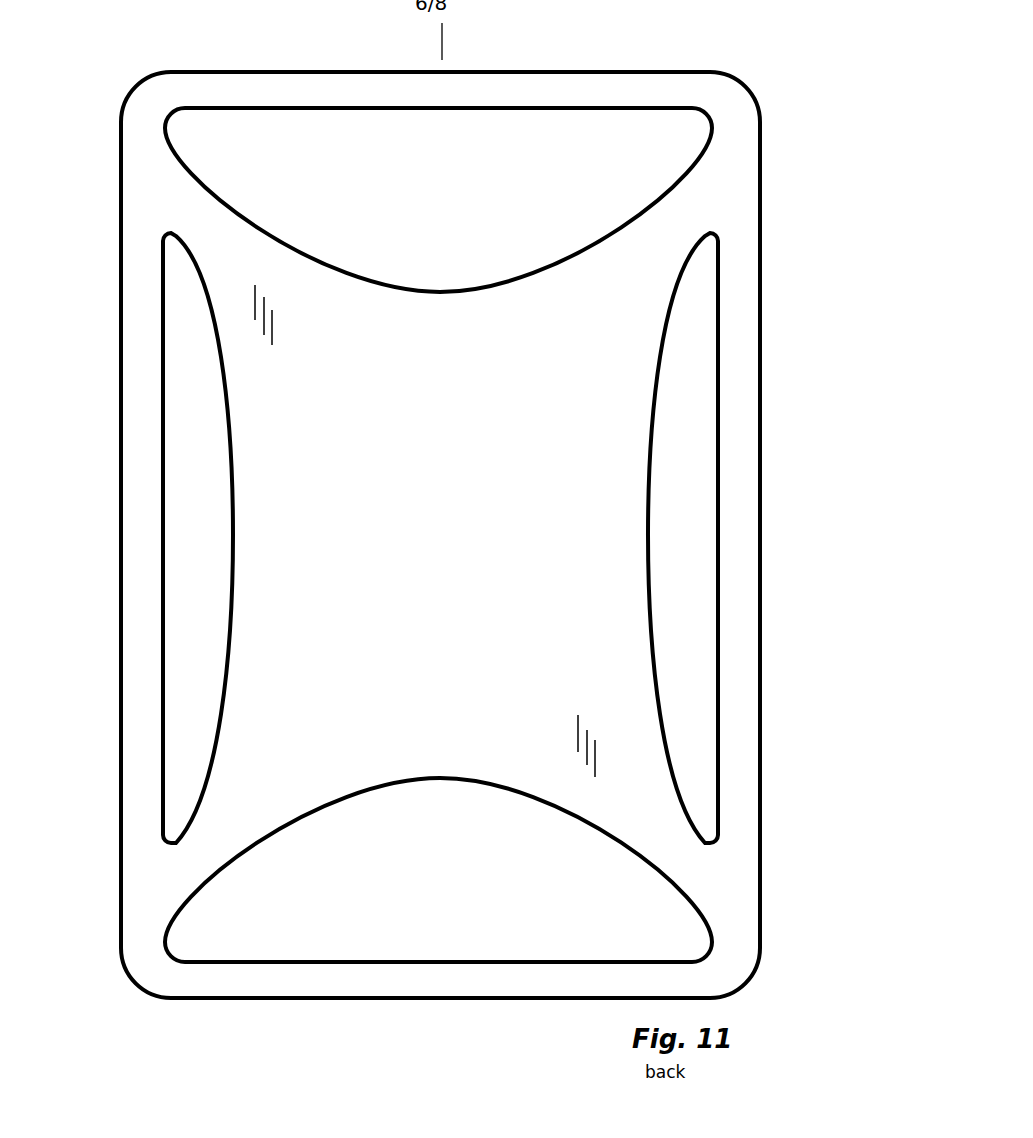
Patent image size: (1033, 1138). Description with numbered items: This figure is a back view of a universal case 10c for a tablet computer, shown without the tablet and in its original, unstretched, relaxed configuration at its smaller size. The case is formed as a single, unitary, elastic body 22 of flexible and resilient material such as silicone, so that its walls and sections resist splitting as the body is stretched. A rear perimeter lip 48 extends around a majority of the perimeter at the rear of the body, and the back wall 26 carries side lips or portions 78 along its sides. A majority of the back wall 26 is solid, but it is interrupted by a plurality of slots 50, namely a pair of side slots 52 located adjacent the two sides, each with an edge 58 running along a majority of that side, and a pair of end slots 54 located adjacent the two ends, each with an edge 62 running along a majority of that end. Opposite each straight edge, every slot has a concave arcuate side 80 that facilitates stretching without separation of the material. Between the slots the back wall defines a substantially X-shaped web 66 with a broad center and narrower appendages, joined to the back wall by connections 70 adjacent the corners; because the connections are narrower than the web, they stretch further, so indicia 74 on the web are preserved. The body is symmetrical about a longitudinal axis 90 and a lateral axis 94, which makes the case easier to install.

The universal case 10c is at (602, 66).
The body 22 is at (722, 133).
The back wall 26 is at (603, 417).
The rear perimeter lip 48 is at (718, 688).
The slots 50 is at (692, 617).
The side slots 52 is at (183, 352).
The end slots 54 is at (473, 120).
The edge 58 is at (162, 423).
The edge 62 is at (358, 108).
The web 66 is at (263, 570).
The connections 70 is at (170, 197).
The indicia 74 is at (430, 485).
The side lips 78 is at (163, 492).
The concave arcuate side 80 is at (228, 207).
The longitudinal axis 90 is at (442, 42).
The lateral axis 94 is at (768, 533).